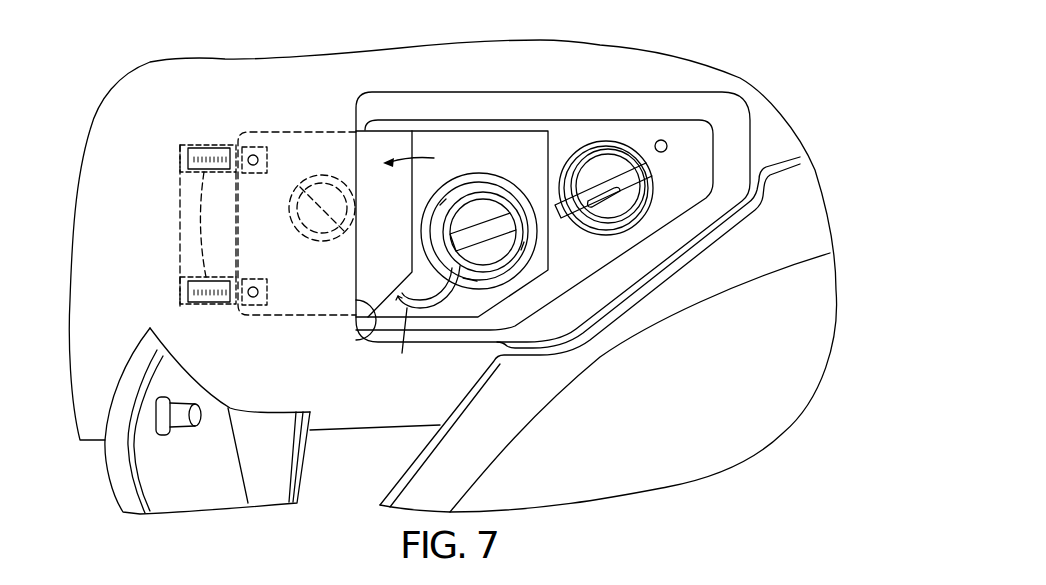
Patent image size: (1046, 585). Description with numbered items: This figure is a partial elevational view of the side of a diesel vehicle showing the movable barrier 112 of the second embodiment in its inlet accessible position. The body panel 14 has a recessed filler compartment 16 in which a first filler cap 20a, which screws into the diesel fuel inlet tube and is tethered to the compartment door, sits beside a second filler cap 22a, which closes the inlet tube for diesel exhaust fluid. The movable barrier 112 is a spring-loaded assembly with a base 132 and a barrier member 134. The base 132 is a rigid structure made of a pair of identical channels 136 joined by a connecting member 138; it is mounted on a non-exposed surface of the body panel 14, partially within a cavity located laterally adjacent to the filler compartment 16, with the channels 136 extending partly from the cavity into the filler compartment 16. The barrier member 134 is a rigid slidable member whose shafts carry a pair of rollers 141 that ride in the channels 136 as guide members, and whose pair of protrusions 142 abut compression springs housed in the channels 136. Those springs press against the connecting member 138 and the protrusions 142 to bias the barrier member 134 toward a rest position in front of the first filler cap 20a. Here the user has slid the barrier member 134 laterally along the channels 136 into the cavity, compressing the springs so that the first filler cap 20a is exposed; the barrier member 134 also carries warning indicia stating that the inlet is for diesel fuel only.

The body panel 14 is at (224, 56).
The filler compartment 16 is at (481, 92).
The first filler cap 20a is at (487, 240).
The second filler cap 22a is at (613, 187).
The movable barrier 112 is at (273, 348).
The base 132 is at (196, 136).
The barrier member 134 is at (383, 340).
The channels 136 is at (213, 146).
The connecting member 138 is at (180, 233).
The rollers 141 is at (250, 288).
The protrusions 142 is at (236, 140).